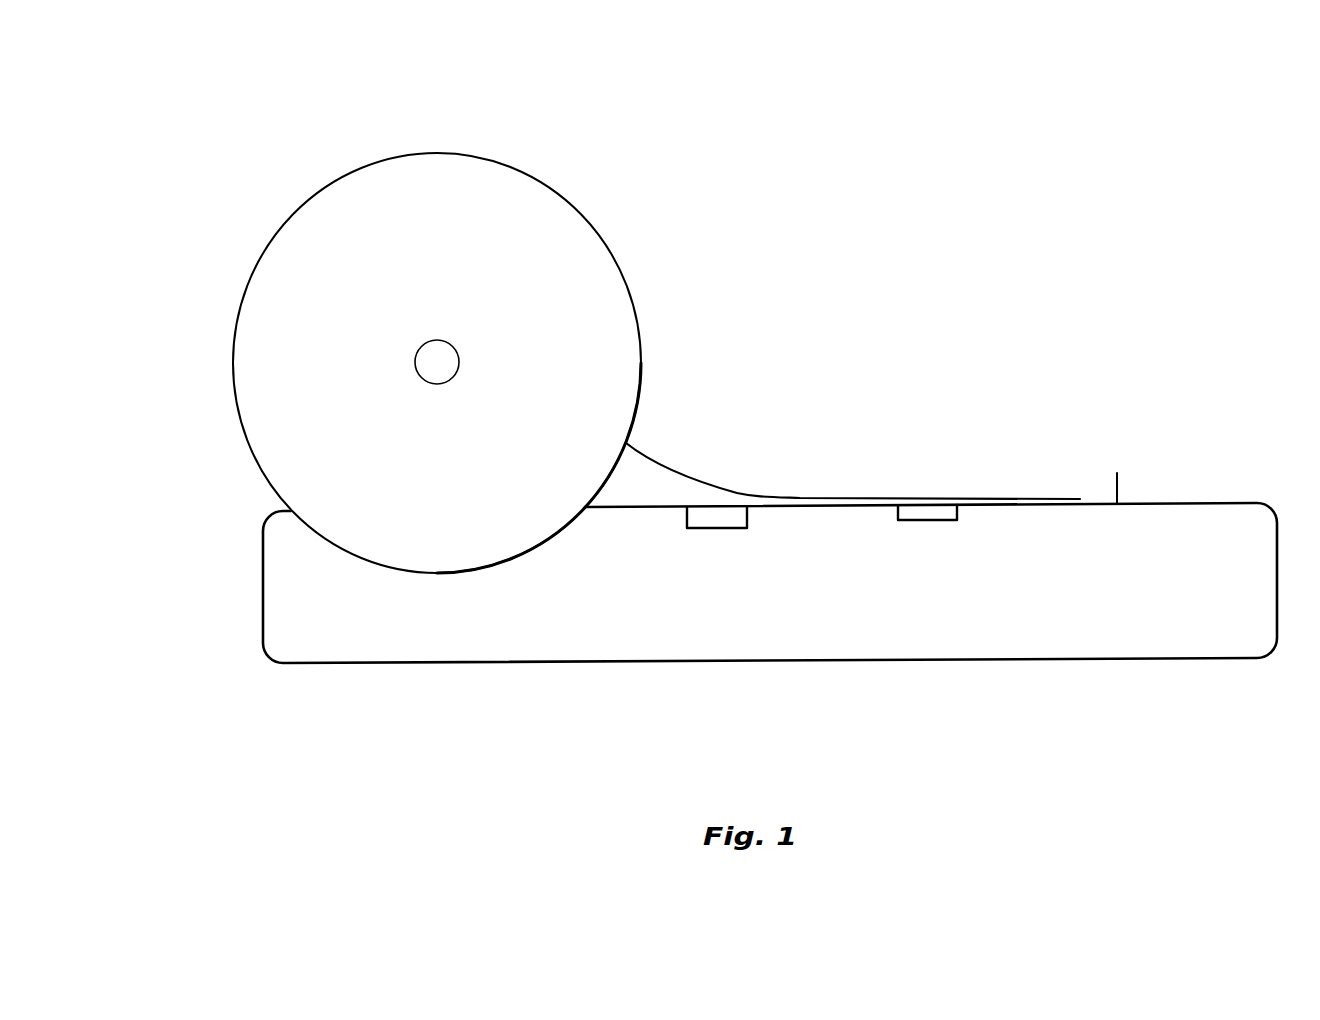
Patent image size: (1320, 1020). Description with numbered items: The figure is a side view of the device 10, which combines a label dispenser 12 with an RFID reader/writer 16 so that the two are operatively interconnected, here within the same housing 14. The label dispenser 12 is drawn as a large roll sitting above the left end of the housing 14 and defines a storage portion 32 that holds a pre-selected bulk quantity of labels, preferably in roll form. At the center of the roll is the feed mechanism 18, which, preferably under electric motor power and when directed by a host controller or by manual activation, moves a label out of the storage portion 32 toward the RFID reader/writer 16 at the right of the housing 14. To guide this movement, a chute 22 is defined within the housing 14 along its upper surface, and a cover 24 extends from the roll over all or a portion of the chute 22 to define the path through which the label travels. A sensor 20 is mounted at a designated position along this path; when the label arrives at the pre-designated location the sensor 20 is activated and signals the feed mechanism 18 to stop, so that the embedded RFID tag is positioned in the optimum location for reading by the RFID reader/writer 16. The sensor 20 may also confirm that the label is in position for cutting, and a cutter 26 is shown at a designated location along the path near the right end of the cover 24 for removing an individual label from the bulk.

The device 10 is at (260, 173).
The label dispenser 12 is at (277, 355).
The housing 14 is at (543, 660).
The RFID reader/writer 16 is at (1017, 622).
The feed mechanism 18 is at (423, 357).
The sensor 20 is at (721, 528).
The chute 22 is at (683, 507).
The cover 24 is at (768, 493).
The cutter 26 is at (1080, 499).
The storage portion 32 is at (297, 422).